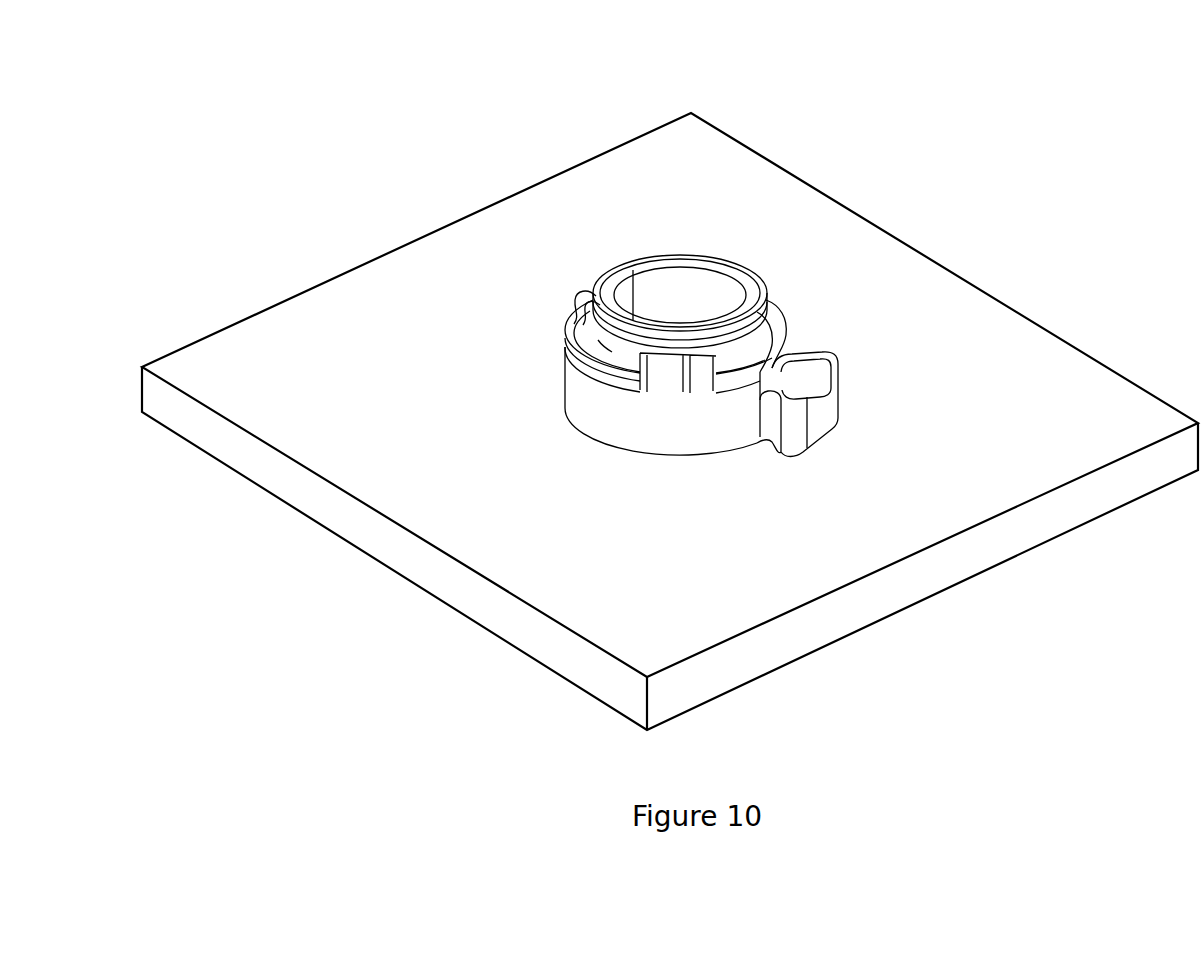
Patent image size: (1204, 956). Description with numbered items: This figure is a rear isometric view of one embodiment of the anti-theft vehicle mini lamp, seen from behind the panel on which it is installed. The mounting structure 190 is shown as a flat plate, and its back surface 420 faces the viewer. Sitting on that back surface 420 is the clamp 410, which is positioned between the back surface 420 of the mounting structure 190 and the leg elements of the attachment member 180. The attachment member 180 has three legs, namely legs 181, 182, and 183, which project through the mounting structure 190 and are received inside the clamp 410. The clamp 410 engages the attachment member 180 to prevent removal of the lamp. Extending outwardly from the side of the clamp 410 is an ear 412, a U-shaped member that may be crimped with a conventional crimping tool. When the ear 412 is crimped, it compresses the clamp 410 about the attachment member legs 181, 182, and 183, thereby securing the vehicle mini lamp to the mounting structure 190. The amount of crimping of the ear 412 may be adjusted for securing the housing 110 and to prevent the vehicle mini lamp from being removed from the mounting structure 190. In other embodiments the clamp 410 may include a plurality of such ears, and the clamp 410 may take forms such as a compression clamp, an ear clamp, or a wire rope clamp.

The housing 110 is at (707, 259).
The attachment member 180 is at (579, 343).
The leg 181 is at (578, 292).
The leg 182 is at (605, 345).
The leg 183 is at (713, 363).
The mounting structure 190 is at (387, 533).
The clamp 410 is at (580, 387).
The ear 412 is at (825, 409).
The back surface 420 is at (915, 320).